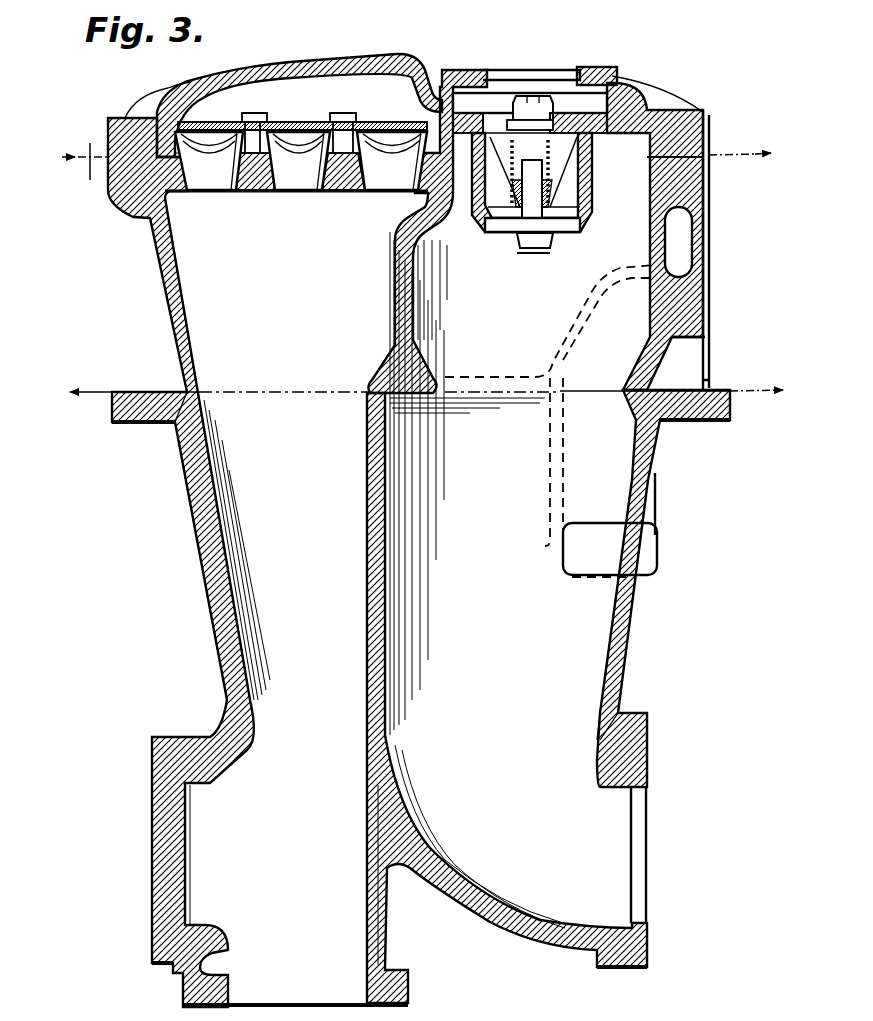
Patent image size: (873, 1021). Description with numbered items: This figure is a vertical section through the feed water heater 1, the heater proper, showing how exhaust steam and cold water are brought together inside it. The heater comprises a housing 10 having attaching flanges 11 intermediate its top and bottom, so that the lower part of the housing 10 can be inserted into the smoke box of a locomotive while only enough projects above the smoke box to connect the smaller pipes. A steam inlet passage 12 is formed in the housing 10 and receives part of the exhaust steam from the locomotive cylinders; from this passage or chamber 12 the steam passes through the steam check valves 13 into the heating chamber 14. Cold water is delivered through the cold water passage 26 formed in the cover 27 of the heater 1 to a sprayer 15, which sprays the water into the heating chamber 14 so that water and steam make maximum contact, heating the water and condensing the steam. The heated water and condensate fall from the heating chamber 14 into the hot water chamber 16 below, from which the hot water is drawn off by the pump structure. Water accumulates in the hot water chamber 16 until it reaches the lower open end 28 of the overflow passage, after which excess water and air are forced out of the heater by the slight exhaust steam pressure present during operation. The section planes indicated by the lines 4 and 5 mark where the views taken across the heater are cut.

The feed water heater 1 is at (641, 591).
The housing 10 is at (655, 477).
The attaching flanges 11 is at (157, 423).
The steam inlet passage 12 is at (228, 518).
The steam check valves 13 is at (368, 148).
The heating chamber 14 is at (627, 238).
The sprayer 15 is at (565, 188).
The hot water chamber 16 is at (580, 635).
The cold water passage 26 is at (578, 103).
The cover 27 is at (405, 60).
The lower open end of overflow passage 28 is at (610, 543).
The section line 4- 4 is at (412, 160).
The section line 5- 5 is at (425, 392).